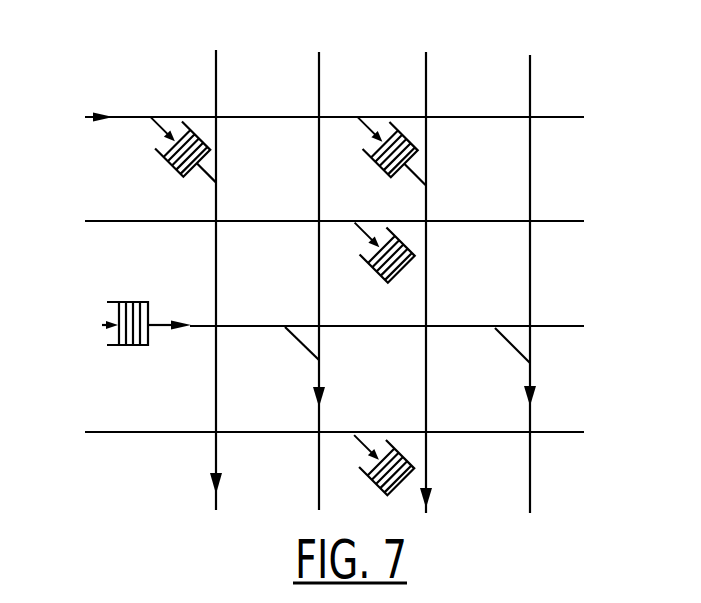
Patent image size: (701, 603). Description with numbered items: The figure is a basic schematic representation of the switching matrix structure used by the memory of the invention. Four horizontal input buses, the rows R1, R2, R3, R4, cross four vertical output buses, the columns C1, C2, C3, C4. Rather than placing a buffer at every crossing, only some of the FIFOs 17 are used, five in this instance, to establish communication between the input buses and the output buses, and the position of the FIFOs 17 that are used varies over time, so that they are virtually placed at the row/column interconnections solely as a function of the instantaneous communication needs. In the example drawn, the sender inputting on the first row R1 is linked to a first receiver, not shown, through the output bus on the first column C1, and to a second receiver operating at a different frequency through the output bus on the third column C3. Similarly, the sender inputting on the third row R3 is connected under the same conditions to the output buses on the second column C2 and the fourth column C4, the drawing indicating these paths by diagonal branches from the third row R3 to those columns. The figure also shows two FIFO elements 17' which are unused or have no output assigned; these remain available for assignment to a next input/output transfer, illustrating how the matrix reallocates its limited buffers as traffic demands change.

The FIFO 17 is at (406, 300).
The FIFO element 17' is at (406, 246).
The first row R1 is at (311, 112).
The second row R2 is at (311, 212).
The third row R3 is at (311, 323).
The fourth row R4 is at (311, 426).
The first column C1 is at (226, 272).
The second column C2 is at (317, 273).
The third column C3 is at (439, 274).
The fourth column C4 is at (527, 274).